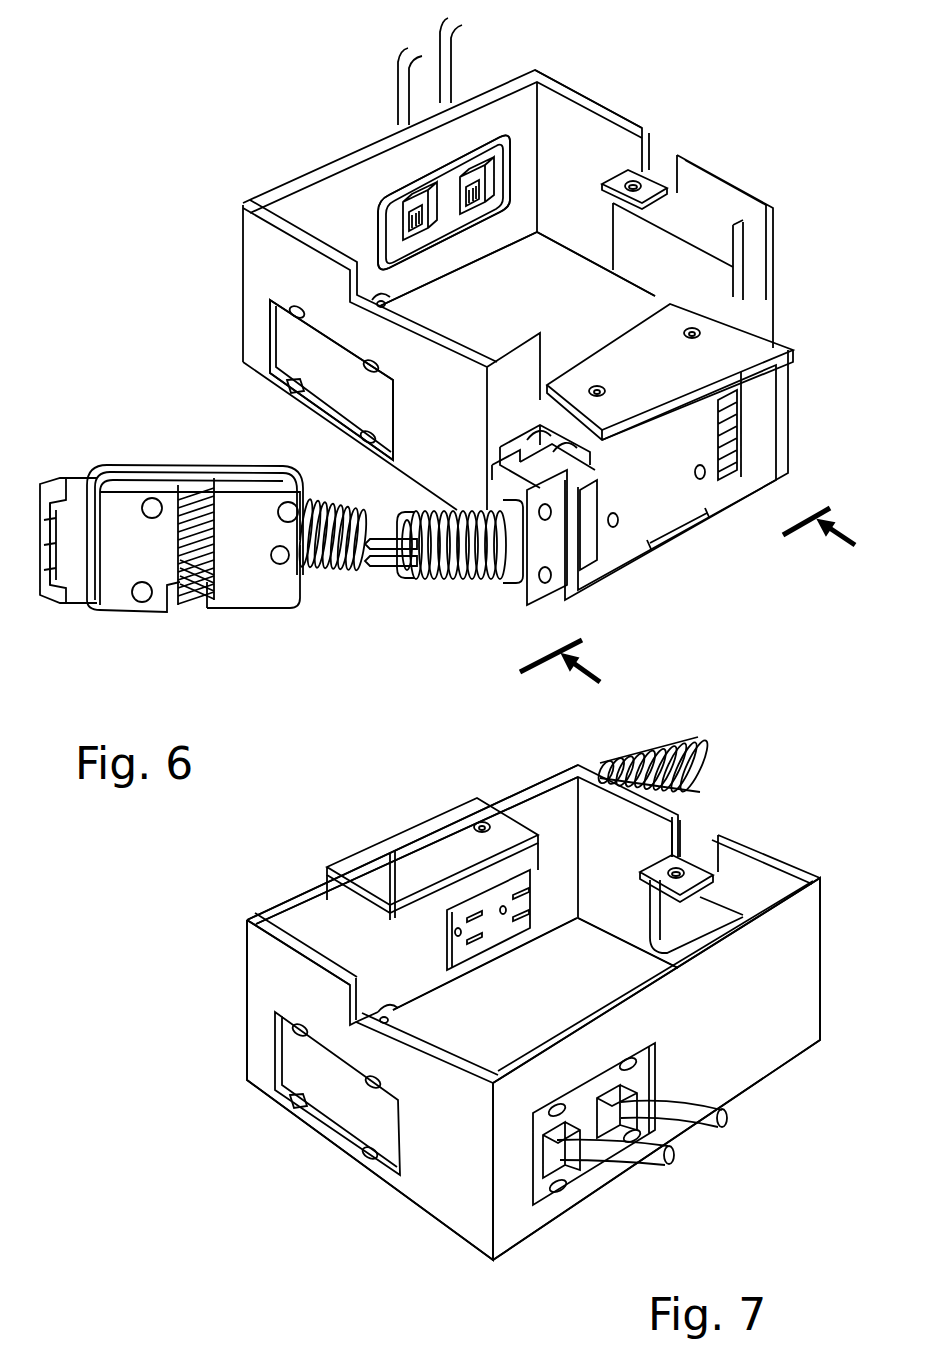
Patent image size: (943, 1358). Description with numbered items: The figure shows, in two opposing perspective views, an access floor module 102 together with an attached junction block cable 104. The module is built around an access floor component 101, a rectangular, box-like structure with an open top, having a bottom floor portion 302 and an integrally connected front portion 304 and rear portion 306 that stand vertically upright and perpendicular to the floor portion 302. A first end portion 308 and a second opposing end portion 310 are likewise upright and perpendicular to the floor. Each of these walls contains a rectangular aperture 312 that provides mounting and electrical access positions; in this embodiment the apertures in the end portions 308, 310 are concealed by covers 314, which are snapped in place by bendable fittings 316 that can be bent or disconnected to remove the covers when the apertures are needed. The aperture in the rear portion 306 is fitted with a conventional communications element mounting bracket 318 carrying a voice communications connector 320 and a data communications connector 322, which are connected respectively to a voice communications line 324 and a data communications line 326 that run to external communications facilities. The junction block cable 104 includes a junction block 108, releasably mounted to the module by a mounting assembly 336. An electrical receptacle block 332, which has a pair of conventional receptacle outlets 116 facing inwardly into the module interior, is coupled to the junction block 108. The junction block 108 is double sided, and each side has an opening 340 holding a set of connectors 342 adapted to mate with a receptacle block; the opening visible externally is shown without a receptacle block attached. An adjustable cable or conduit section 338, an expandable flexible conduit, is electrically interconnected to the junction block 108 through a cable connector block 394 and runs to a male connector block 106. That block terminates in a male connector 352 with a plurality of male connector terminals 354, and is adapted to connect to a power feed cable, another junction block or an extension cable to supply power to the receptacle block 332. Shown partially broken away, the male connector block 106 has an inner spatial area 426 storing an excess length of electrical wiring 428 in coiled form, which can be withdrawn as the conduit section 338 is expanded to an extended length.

In FIG. 6, the access floor component 101 is at (732, 166).
In FIG. 7, the access floor component 101 is at (676, 859).
In FIG. 6, the access floor module 102 is at (722, 126).
In FIG. 7, the access floor module 102 is at (747, 826).
In FIG. 6, the junction block cable 104 is at (385, 617).
In FIG. 7, the junction block cable 104 is at (700, 731).
In FIG. 6, the male connector block 106 is at (131, 437).
In FIG. 6, the junction block 108 is at (690, 541).
In FIG. 7, the junction block 108 is at (506, 785).
In FIG. 7, the receptacle outlets 116 is at (524, 946).
In FIG. 6, the bottom floor portion 302 is at (553, 314).
In FIG. 6, the front portion 304 is at (763, 278).
In FIG. 7, the front portion 304 is at (327, 912).
In FIG. 7, the rear portion 306 is at (793, 1033).
In FIG. 6, the first end portion 308 is at (258, 300).
In FIG. 7, the first end portion 308 is at (767, 893).
In FIG. 6, the second end portion 310 is at (610, 148).
In FIG. 7, the second end portion 310 is at (433, 1183).
In FIG. 6, the rectangular aperture 312 is at (374, 184).
In FIG. 7, the rectangular aperture 312 is at (387, 1126).
In FIG. 6, the covers 314 is at (378, 407).
In FIG. 7, the covers 314 is at (718, 937).
In FIG. 6, the bendable fittings 316 is at (296, 310).
In FIG. 7, the bendable fittings 316 is at (297, 1022).
In FIG. 6, the communications element mounting bracket 318 is at (407, 250).
In FIG. 6, the voice communications connector 320 is at (410, 220).
In FIG. 7, the voice communications connector 320 is at (647, 1070).
In FIG. 6, the data communications connector 322 is at (493, 197).
In FIG. 7, the data communications connector 322 is at (547, 1157).
In FIG. 6, the voice communications line 324 is at (397, 100).
In FIG. 7, the voice communications line 324 is at (702, 1123).
In FIG. 6, the data communications line 326 is at (449, 78).
In FIG. 7, the data communications line 326 is at (597, 1163).
In FIG. 7, the electrical receptacle block 332 is at (423, 932).
In FIG. 6, the mounting assembly 336 is at (584, 348).
In FIG. 7, the mounting assembly 336 is at (401, 815).
In FIG. 6, the adjustable cable or conduit section 338 is at (325, 572).
In FIG. 6, the opening 340 is at (646, 492).
In FIG. 6, the connectors 342 is at (716, 423).
In FIG. 6, the male connector 352 is at (79, 617).
In FIG. 6, the male connector terminals 354 is at (40, 592).
In FIG. 6, the cable connector block 394 is at (675, 608).
In FIG. 6, the inner spatial area 426 is at (210, 478).
In FIG. 6, the excess length of electrical wiring 428 is at (190, 478).